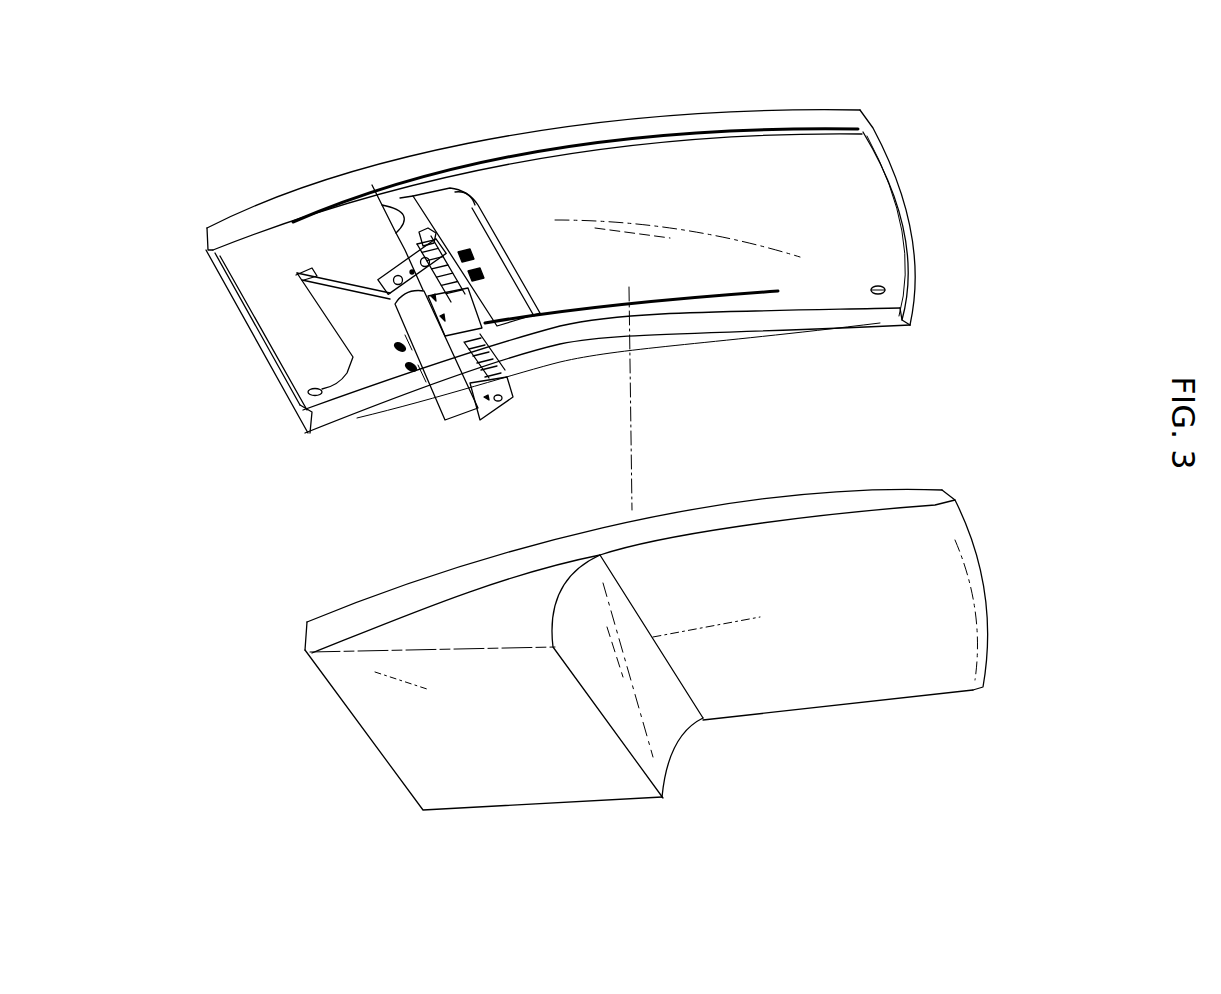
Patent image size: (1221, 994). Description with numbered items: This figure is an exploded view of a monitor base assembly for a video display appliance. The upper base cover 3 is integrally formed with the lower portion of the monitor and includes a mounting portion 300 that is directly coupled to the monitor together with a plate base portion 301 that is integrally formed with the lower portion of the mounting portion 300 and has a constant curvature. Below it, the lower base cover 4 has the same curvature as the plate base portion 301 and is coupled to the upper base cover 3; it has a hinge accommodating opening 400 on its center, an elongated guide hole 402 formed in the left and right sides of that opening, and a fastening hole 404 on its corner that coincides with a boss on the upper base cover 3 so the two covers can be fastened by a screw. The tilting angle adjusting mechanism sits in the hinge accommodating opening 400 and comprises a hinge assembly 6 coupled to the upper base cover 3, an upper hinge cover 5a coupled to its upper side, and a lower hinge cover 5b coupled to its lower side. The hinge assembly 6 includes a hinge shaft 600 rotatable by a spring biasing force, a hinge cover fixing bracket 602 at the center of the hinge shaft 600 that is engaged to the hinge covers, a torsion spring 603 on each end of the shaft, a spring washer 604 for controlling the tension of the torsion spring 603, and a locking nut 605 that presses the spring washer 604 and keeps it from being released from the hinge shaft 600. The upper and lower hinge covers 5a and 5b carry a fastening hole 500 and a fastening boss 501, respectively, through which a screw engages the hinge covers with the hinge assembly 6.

The upper base cover 3 is at (498, 812).
The mounting portion 300 is at (627, 787).
The plate base portion 301 is at (900, 673).
The lower base cover 4 is at (220, 220).
The hinge accommodating opening 400 is at (382, 203).
The elongated guide hole 402 is at (698, 310).
The fastening hole 404 is at (877, 300).
The upper hinge cover 5a is at (300, 393).
The lower hinge cover 5b is at (430, 210).
The fastening hole 500 is at (396, 352).
The fastening boss 501 is at (505, 245).
The hinge assembly 6 is at (481, 433).
The hinge shaft 600 is at (530, 337).
The hinge cover fixing bracket 602 is at (458, 413).
The torsion spring 603 is at (510, 370).
The spring washer 604 is at (458, 200).
The locking nut 605 is at (432, 210).